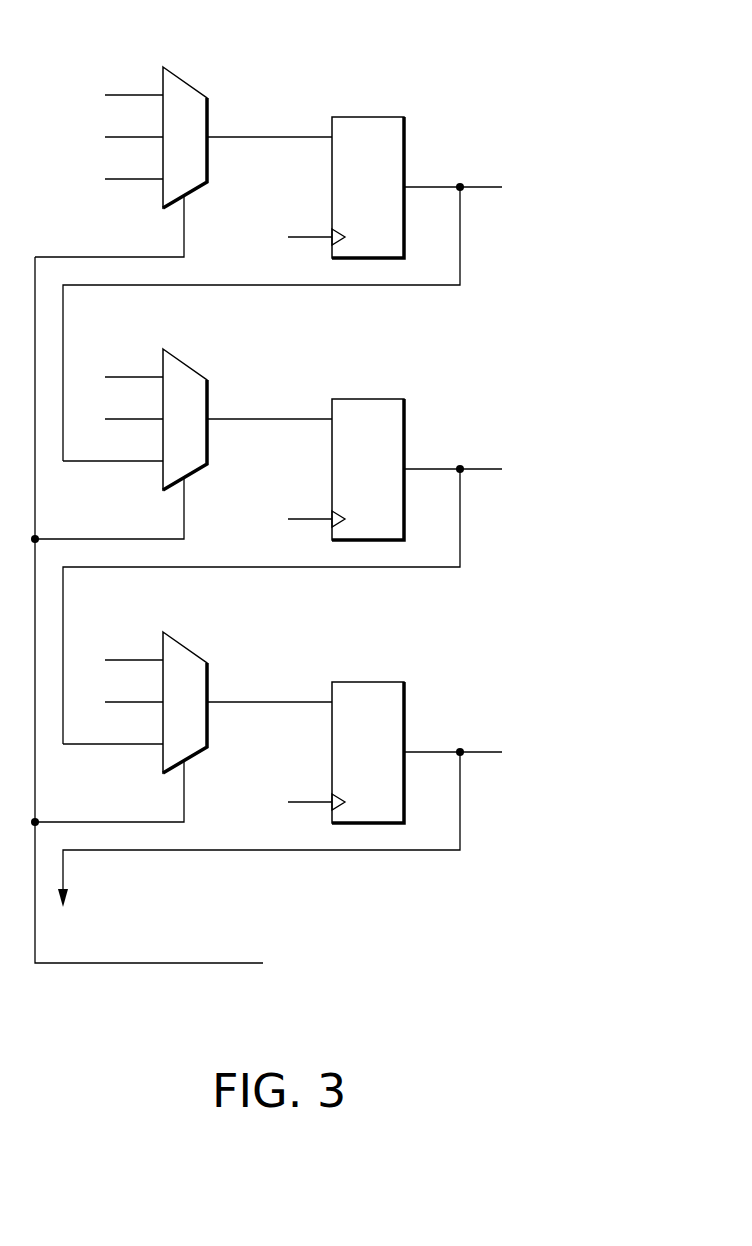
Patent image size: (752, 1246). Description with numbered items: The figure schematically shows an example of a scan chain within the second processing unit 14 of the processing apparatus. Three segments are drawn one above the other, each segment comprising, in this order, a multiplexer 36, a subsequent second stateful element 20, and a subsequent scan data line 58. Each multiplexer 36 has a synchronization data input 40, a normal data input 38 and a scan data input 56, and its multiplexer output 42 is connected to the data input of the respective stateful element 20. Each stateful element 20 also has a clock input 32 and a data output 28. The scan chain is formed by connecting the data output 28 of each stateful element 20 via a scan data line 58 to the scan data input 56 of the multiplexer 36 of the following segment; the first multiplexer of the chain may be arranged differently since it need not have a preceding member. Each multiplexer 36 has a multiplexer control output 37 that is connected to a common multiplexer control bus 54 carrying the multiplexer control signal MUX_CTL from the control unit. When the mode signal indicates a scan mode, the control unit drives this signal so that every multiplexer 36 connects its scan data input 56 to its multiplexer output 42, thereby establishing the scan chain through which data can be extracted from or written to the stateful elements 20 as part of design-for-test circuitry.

The second processing unit 14 is at (459, 53).
The second stateful element 20 is at (360, 116).
The data output 28 is at (405, 190).
The clock input 32 is at (331, 237).
The multiplexer 36 is at (184, 80).
The multiplexer control output 37 is at (185, 196).
The normal data input 38 is at (161, 136).
The synchronization data input 40 is at (161, 94).
The multiplexer output 42 is at (208, 135).
The multiplexer control bus 54 is at (78, 964).
The scan data input 56 is at (161, 178).
The scan data line 58 is at (262, 286).